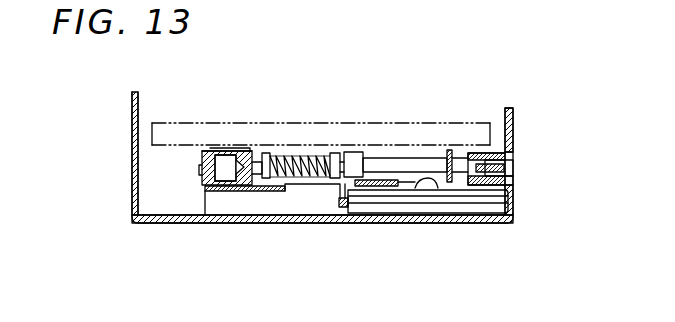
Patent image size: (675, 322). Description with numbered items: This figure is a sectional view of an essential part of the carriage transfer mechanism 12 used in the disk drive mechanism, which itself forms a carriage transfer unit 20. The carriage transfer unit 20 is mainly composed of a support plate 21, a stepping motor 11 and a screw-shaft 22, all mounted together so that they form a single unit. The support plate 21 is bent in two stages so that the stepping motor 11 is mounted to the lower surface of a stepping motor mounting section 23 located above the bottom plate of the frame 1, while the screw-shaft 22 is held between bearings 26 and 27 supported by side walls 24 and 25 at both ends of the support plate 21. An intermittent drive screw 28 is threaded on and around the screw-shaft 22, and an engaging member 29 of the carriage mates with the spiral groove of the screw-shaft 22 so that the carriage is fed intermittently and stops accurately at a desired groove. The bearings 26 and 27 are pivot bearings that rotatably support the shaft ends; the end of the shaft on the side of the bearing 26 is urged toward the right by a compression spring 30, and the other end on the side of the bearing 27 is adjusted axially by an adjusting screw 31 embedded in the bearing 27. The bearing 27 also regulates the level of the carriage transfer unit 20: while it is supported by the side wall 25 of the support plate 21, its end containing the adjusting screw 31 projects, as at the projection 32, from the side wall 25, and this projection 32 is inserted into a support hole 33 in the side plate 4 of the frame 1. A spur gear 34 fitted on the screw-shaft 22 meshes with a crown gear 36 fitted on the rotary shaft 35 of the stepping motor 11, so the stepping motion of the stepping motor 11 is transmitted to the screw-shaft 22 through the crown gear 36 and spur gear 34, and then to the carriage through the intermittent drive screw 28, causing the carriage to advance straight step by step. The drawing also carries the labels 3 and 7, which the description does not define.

The frame 1 is at (133, 186).
The left side wall 3 is at (133, 113).
The side plate 4 is at (511, 118).
The axis 7 is at (152, 137).
The stepping motor 11 is at (496, 217).
The carriage transfer mechanism 12 is at (262, 126).
The carriage transfer unit 20 is at (350, 219).
The support plate 21 is at (334, 208).
The screw-shaft 22 is at (373, 150).
The stepping motor mounting section 23 is at (394, 188).
The side wall 24 is at (205, 191).
The side wall 25 is at (498, 152).
The bearing 26 is at (210, 149).
The bearing 27 is at (471, 156).
The intermittent drive screw 28 is at (300, 192).
The engaging member 29 is at (296, 178).
The compression spring 30 is at (232, 191).
The adjusting screw 31 is at (512, 174).
The projection 32 is at (513, 148).
The support hole 33 is at (513, 166).
The spur gear 34 is at (448, 150).
The rotary shaft 35 is at (466, 212).
The crown gear 36 is at (428, 190).